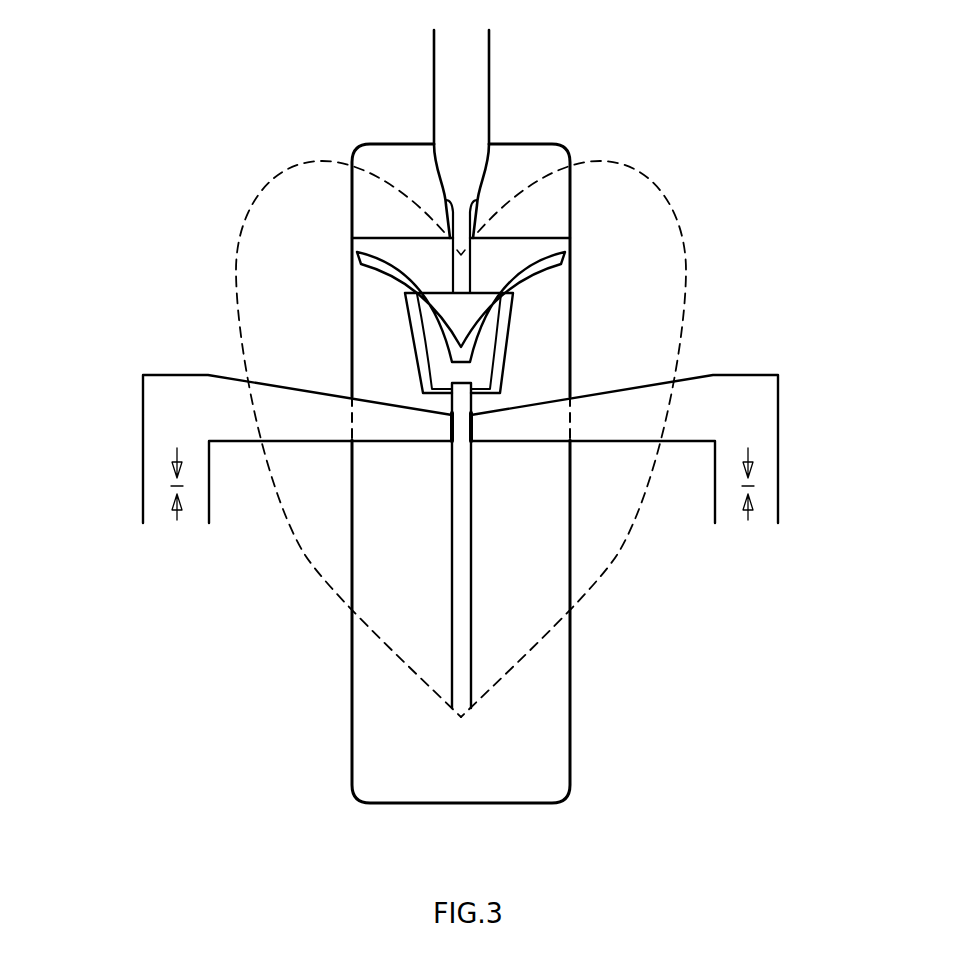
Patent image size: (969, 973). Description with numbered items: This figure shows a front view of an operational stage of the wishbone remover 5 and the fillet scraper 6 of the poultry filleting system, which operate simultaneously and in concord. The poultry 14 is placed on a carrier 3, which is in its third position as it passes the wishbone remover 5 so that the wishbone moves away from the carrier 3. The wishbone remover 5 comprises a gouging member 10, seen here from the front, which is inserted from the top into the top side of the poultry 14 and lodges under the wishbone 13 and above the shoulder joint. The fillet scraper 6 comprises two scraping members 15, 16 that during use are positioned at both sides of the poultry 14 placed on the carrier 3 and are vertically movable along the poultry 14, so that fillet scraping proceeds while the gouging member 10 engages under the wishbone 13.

The carrier 3 is at (542, 716).
The wishbone remover 5 is at (466, 81).
The fillet scraper 6 is at (175, 348).
The gouging member 10 is at (464, 290).
The wishbone 13 is at (374, 255).
The poultry 14 is at (556, 567).
The scraping member 15 is at (749, 433).
The scraping member 16 is at (157, 436).